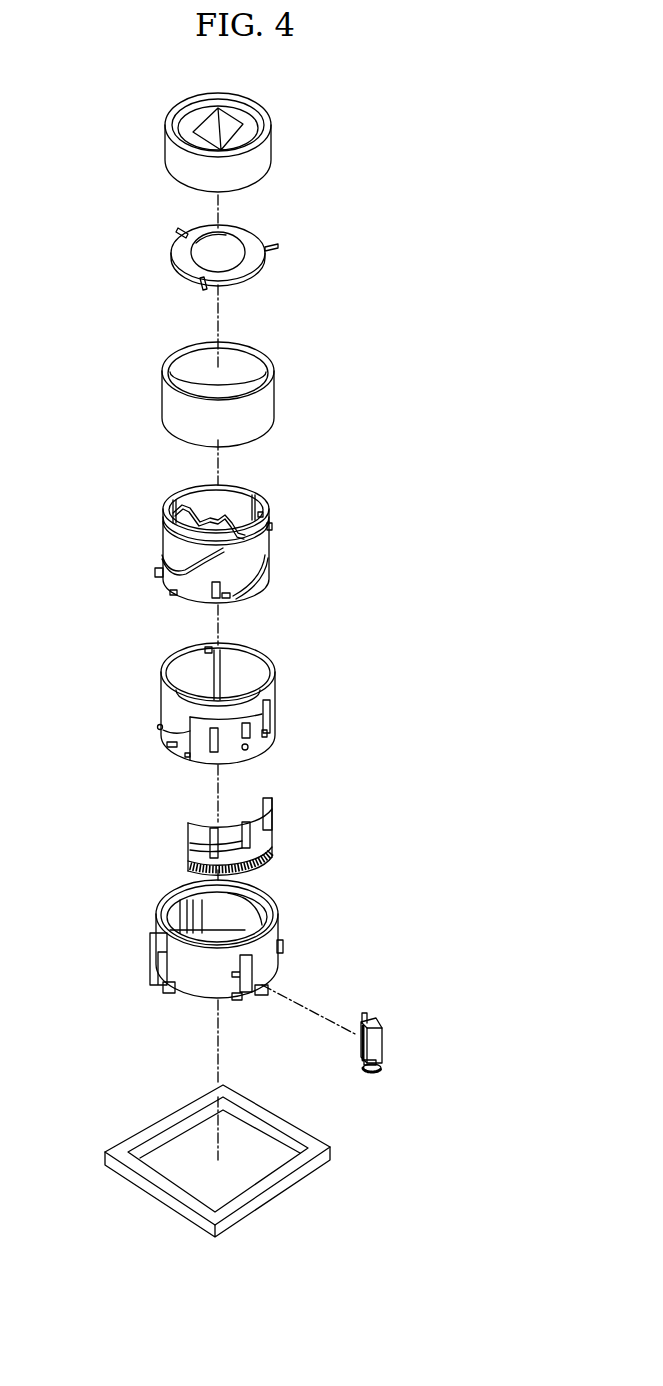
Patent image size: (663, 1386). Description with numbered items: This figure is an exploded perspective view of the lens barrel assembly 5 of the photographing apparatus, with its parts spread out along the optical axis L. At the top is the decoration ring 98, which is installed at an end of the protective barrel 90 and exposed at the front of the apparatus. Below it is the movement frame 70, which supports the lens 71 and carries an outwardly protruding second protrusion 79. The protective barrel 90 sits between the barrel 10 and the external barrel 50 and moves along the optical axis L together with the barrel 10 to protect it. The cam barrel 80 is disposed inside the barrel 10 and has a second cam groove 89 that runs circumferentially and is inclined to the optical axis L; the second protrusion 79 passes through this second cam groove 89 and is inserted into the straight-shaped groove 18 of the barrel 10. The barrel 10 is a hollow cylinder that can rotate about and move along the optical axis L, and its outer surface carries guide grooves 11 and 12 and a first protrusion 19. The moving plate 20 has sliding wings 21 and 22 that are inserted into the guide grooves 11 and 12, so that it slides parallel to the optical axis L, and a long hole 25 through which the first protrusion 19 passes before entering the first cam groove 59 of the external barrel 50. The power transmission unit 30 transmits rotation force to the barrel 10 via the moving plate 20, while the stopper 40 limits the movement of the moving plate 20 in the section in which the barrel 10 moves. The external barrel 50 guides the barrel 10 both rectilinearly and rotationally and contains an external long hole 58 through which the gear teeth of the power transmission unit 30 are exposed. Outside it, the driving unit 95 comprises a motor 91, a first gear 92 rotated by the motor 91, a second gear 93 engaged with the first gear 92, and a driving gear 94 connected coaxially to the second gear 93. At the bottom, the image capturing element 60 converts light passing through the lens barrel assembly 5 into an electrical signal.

The lens barrel assembly 5 is at (90, 140).
The decoration ring 98 is at (264, 113).
The movement frame 70 is at (260, 235).
The lens 71 is at (232, 259).
The second protrusion 79 is at (271, 223).
The optical axis L is at (222, 318).
The protective barrel 90 is at (278, 398).
The cam barrel 80 is at (255, 556).
The second cam groove 89 is at (262, 585).
The barrel 10 is at (236, 705).
The straight-shaped groove 18 is at (216, 678).
The guide groove 11 is at (196, 728).
The guide groove 12 is at (270, 725).
The first protrusion 19 is at (250, 750).
The moving plate 20 is at (244, 837).
The sliding wing 21 is at (198, 830).
The sliding wing 22 is at (270, 819).
The long hole 25 is at (213, 845).
The power transmission unit 30 is at (262, 858).
The external barrel 50 is at (282, 970).
The stopper 40 is at (245, 895).
The first cam groove 59 is at (273, 938).
The external long hole 58 is at (250, 978).
The driving unit 95 is at (394, 1048).
The motor 91 is at (378, 1043).
The first gear 92 is at (383, 1073).
The second gear 93 is at (361, 1059).
The driving gear 94 is at (360, 1038).
The image capturing element 60 is at (309, 1124).